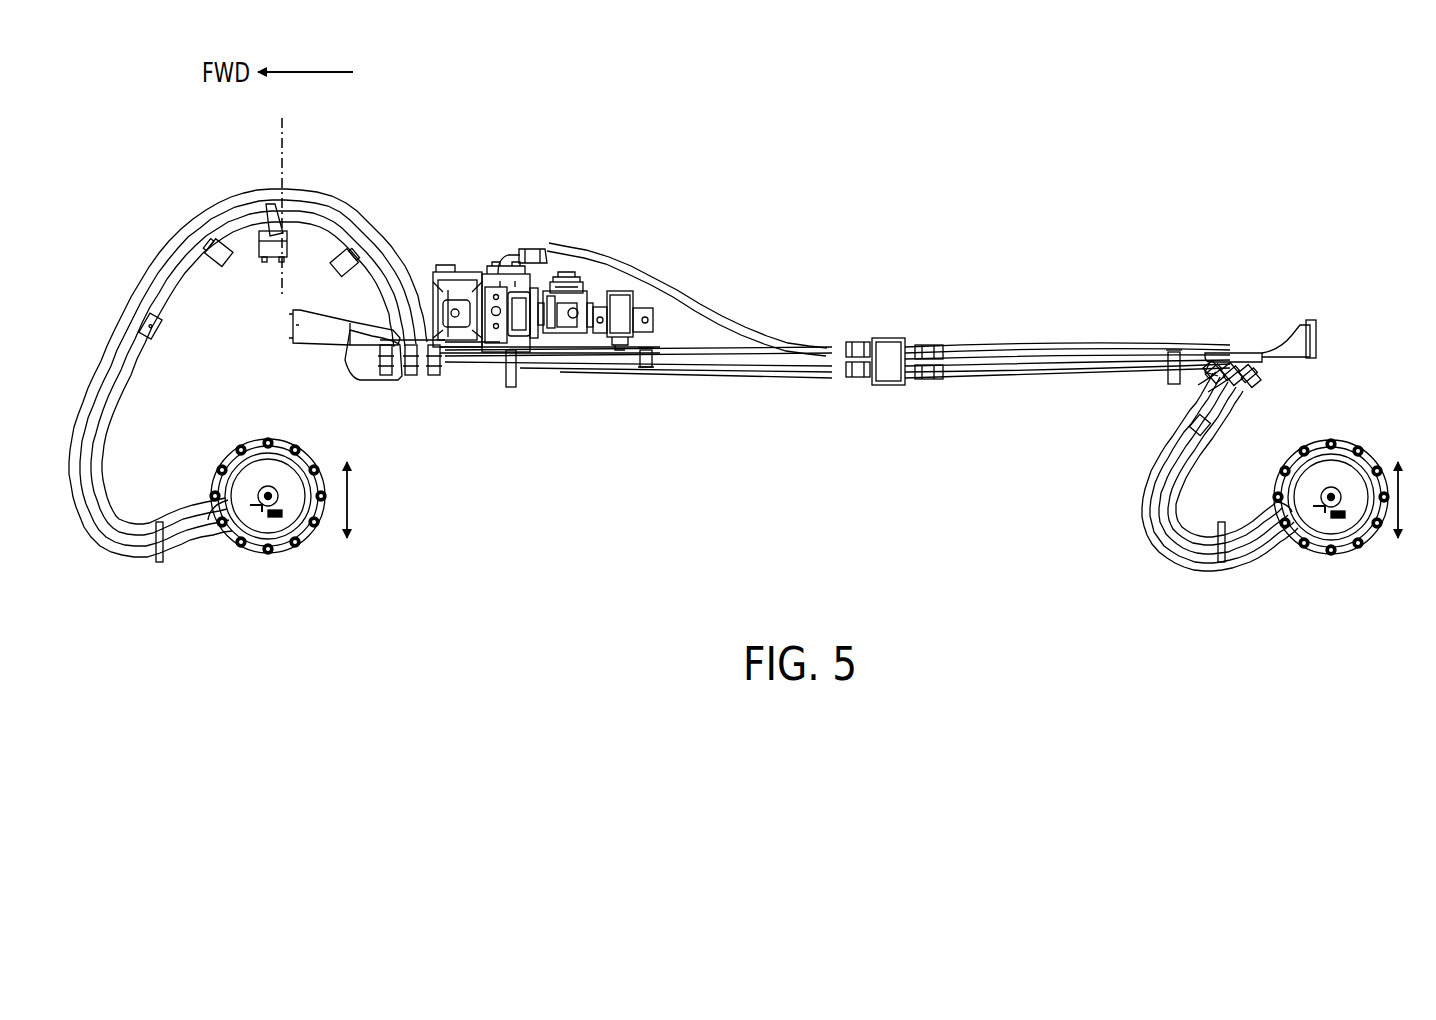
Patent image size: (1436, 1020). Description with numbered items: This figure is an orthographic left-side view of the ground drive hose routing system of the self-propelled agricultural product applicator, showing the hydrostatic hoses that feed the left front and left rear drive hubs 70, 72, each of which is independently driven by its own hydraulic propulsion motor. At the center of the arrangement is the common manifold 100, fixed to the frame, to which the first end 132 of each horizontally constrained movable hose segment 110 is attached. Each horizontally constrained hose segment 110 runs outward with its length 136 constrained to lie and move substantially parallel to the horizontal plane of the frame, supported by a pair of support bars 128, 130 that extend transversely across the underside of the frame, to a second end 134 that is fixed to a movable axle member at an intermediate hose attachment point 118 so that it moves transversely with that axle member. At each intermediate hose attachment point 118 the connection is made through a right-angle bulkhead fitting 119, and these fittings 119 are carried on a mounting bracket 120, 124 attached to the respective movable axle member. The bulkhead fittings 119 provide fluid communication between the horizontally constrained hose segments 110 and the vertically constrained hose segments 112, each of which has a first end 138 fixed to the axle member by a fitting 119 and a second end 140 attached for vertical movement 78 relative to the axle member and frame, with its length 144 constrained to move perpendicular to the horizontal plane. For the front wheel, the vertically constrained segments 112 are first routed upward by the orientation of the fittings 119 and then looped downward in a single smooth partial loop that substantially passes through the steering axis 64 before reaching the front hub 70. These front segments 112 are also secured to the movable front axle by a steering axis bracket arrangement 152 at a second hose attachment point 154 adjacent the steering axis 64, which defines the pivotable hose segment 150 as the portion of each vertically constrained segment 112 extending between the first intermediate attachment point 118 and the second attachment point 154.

The steering axis 64 is at (280, 158).
The hub 70 is at (290, 514).
The hub 72 is at (1343, 525).
The vertical movement 78 is at (352, 500).
The common manifold 100 is at (888, 368).
The horizontally constrained hose segment 110 is at (787, 348).
The vertically constrained hose segment 112 is at (113, 357).
The intermediate hose attachment point 118 is at (382, 389).
The right-angle bulkhead fitting 119 is at (410, 390).
The mounting bracket 120 is at (325, 345).
The mounting bracket 124 is at (1288, 350).
The support bar 128 is at (517, 373).
The support bar 130 is at (1173, 375).
The first end 132 is at (870, 348).
The second end 134 is at (408, 392).
The length 136 is at (552, 362).
The first end 138 is at (405, 330).
The second end 140 is at (233, 538).
The length 144 is at (110, 398).
The pivotable hose segment 150 is at (335, 208).
The steering axis bracket arrangement 152 is at (292, 206).
The second hose attachment point 154 is at (268, 223).